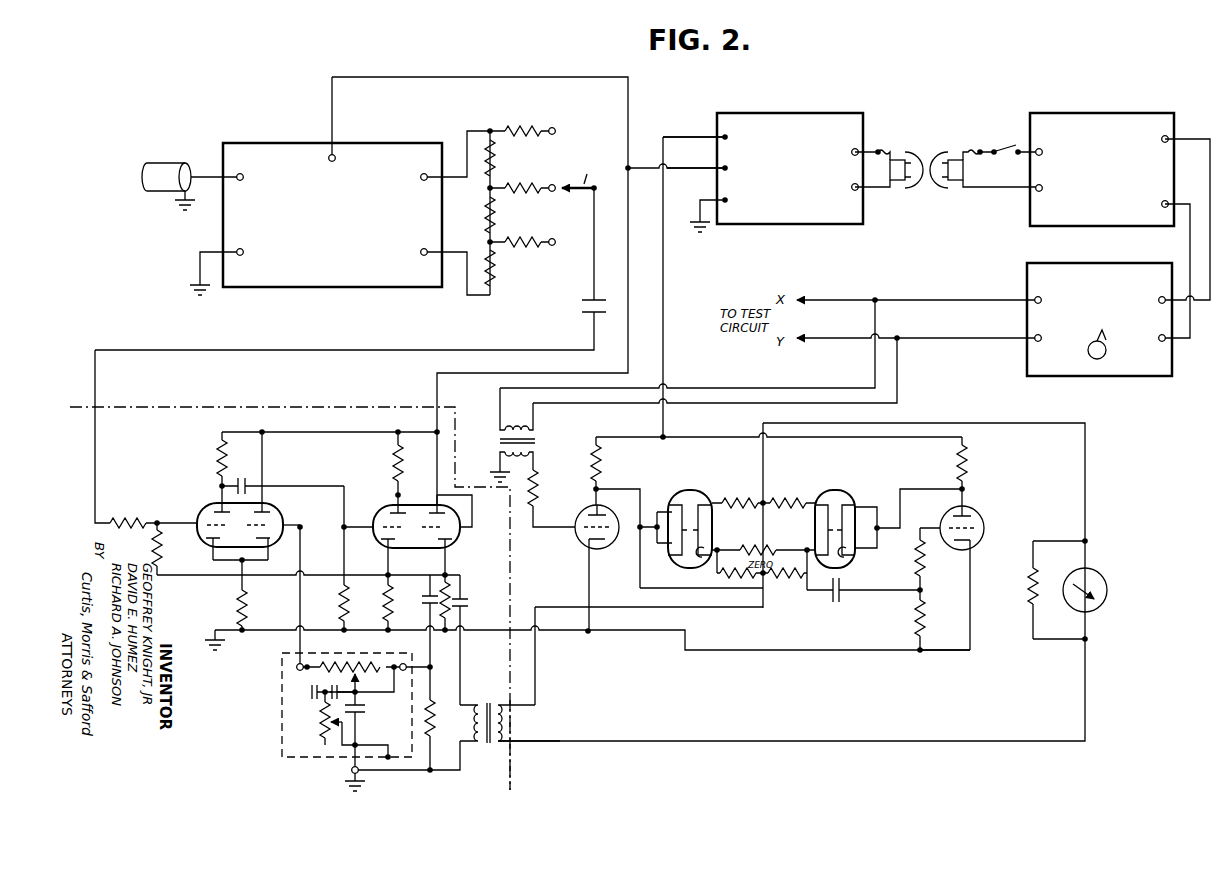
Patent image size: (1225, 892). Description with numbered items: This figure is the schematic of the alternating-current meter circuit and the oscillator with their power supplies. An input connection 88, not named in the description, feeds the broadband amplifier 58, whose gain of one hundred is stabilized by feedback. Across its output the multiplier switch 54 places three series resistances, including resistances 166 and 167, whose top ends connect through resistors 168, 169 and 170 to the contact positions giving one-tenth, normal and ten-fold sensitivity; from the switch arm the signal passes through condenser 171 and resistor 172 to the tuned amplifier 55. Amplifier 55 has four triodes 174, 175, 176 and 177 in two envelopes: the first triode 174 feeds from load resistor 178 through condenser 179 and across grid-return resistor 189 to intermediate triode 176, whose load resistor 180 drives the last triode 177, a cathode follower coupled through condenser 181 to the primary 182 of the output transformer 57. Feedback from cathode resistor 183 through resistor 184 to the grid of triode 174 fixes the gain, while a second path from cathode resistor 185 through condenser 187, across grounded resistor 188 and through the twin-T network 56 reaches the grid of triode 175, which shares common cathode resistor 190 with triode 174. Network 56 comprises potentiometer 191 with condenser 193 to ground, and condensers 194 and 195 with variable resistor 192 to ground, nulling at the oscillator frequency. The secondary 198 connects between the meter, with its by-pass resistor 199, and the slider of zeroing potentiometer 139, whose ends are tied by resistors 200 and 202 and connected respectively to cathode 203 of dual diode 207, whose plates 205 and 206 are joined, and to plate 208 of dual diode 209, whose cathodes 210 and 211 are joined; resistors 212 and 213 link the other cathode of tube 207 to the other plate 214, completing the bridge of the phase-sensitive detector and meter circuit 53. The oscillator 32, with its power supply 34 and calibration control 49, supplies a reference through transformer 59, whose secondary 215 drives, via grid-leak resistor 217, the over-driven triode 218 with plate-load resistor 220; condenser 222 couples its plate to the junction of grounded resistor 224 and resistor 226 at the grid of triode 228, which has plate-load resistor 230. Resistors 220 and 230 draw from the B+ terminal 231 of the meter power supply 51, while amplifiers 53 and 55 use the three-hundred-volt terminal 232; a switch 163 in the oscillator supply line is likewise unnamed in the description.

The microphone transducer 88 is at (169, 166).
The broadband amplifier 58 is at (291, 141).
The multiplier switch 54 is at (541, 211).
The resistance 166 is at (492, 200).
The resistance 167 is at (492, 269).
The resistor 168 is at (510, 130).
The resistor 169 is at (510, 188).
The resistor 170 is at (510, 242).
The condenser 171 is at (585, 309).
The power supply 51 is at (775, 112).
The B+ terminal 231 is at (716, 137).
The 300 volt terminal 232 is at (716, 168).
The switch 163 is at (1007, 145).
The power supply 34 is at (1134, 104).
The oscillator 32 is at (1099, 306).
The manual calibration adjustment control 49 is at (1107, 352).
The transformer 59 is at (511, 435).
The secondary 215 is at (500, 455).
The grid leak resistor 217 is at (541, 492).
The plate-load resistor 220 is at (606, 459).
The over-driven triode 218 is at (575, 534).
The dual diode 207 is at (675, 524).
The plate 206 is at (668, 509).
The plate 205 is at (673, 566).
The cathode 203 is at (702, 562).
The resistor 212 is at (740, 500).
The resistor 213 is at (782, 501).
The zeroing potentiometer 139 is at (762, 547).
The plate 208 is at (804, 549).
The resistor 200 is at (742, 580).
The resistor 202 is at (796, 580).
The condenser 222 is at (836, 600).
The dual diode 209 is at (883, 518).
The plate 214 is at (818, 489).
The cathode 211 is at (851, 500).
The cathode 210 is at (848, 560).
The plate load resistor 230 is at (966, 463).
The second triode 228 is at (975, 516).
The resistor 226 is at (915, 556).
The resistor 224 is at (916, 627).
The phase sensitive detector and meter circuit 53 is at (1062, 552).
The by-pass resistor 199 is at (1027, 598).
The resistor 172 is at (119, 517).
The resistor 184 is at (161, 556).
The first triode 174 is at (203, 511).
The second triode 175 is at (284, 515).
The load resistor 178 is at (218, 460).
The condenser 179 is at (250, 484).
The common cathode resistor 190 is at (248, 600).
The intermediate triode 176 is at (372, 511).
The last triode 177 is at (458, 539).
The load resistor 180 is at (393, 461).
The grid-return resistor 189 is at (340, 600).
The cathode resistor 183 is at (386, 600).
The condenser 187 is at (426, 598).
The condenser 181 is at (452, 596).
The cathode resistor 185 is at (468, 609).
The twin-T coupling network 56 is at (320, 713).
The potentiometer resistor 191 is at (345, 661).
The condenser 195 is at (334, 686).
The condenser 194 is at (314, 698).
The condenser 193 is at (362, 711).
The variable resistor 192 is at (337, 726).
The grounded resistor 188 is at (436, 722).
The output transformer 57 is at (496, 710).
The primary 182 is at (474, 719).
The secondary 198 is at (504, 720).
The tuned amplifier 55 is at (516, 771).